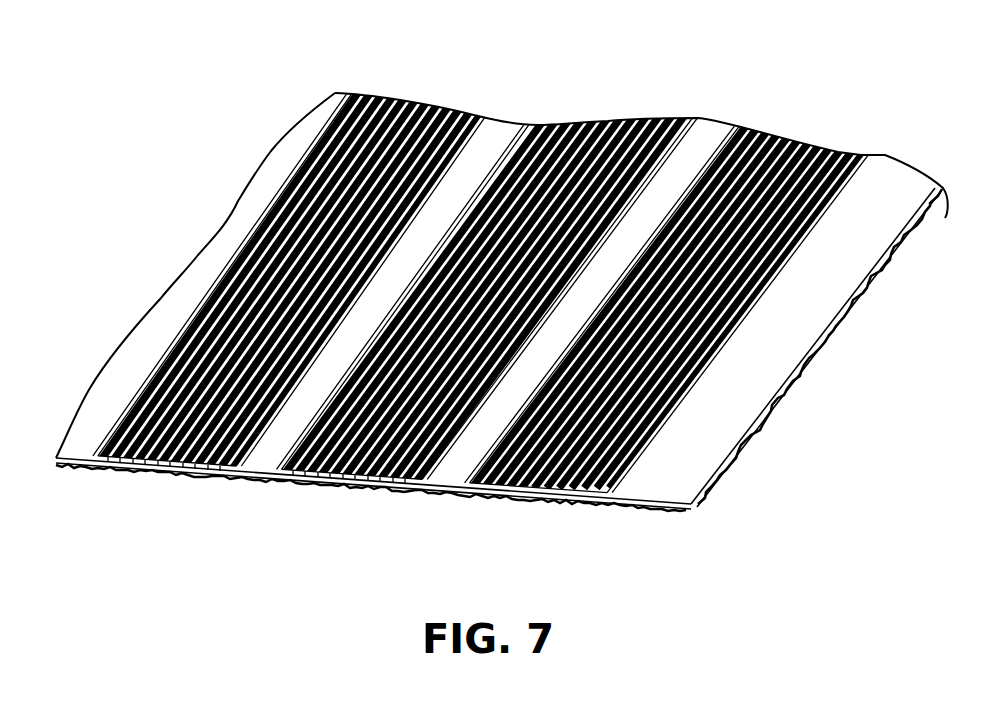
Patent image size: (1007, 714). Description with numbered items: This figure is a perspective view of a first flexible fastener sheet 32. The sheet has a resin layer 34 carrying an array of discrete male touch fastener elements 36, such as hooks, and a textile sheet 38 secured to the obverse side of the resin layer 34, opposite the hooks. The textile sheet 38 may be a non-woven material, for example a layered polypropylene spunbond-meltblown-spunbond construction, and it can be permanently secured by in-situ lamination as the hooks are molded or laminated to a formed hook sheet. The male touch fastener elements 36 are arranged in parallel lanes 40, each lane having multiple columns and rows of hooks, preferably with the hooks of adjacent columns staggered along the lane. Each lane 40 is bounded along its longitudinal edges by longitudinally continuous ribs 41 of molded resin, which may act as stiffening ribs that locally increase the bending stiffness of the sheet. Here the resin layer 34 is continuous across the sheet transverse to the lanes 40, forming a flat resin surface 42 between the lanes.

The flexible fastener sheet 32 is at (767, 112).
The resin layer 34 is at (798, 310).
The male touch fastener elements 36 is at (618, 113).
The textile sheet 38 is at (632, 530).
The lanes 40 is at (143, 492).
The ribs 41 is at (848, 145).
The flat resin surface 42 is at (502, 118).